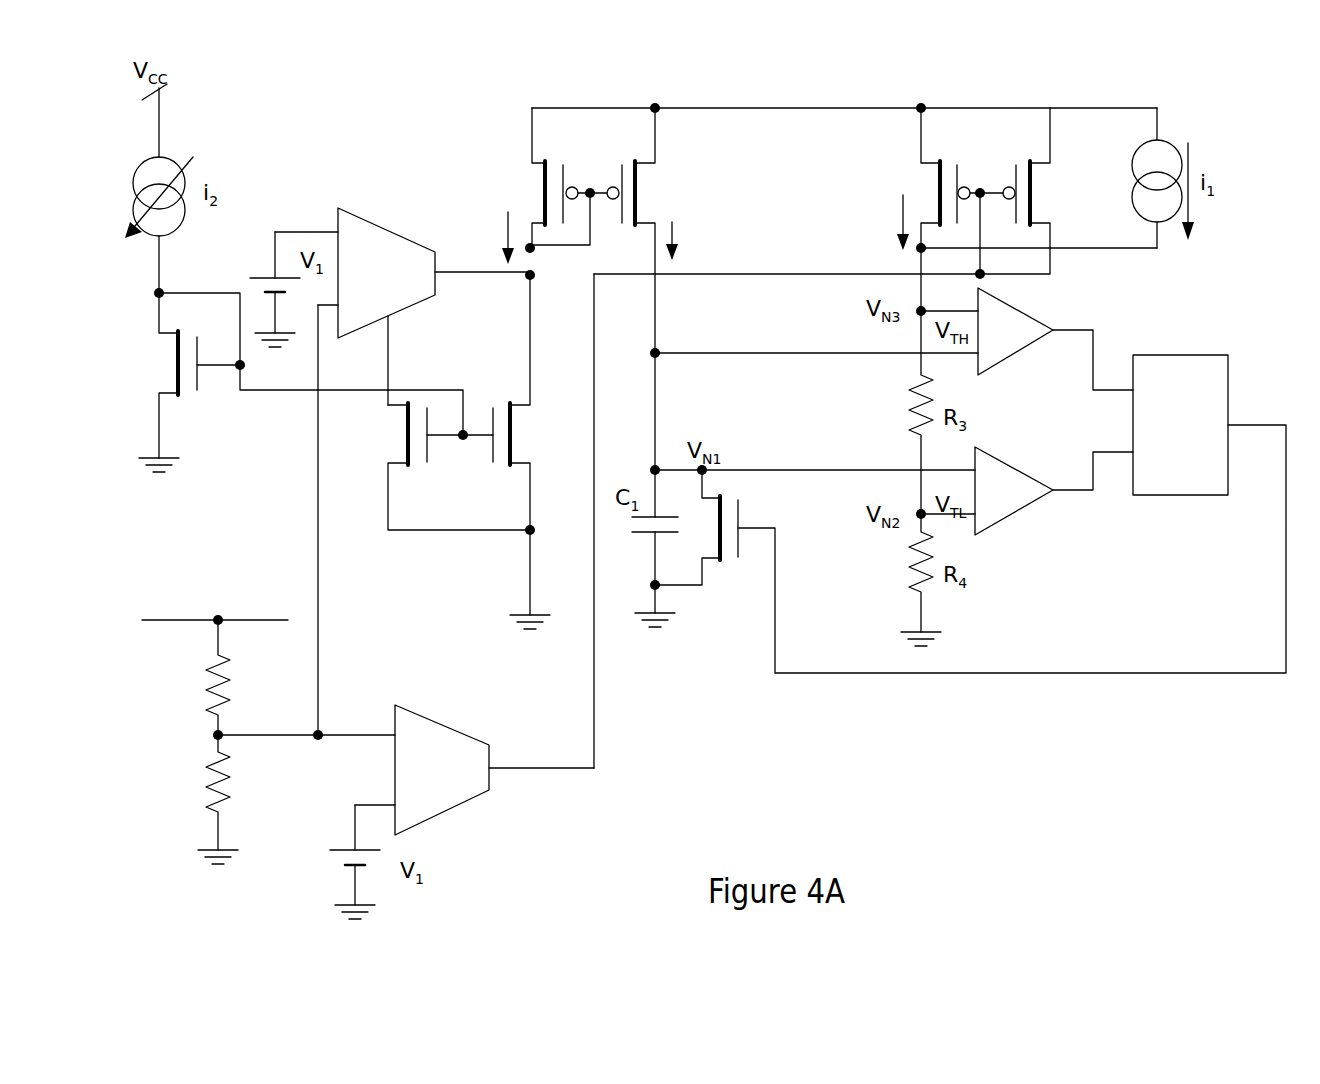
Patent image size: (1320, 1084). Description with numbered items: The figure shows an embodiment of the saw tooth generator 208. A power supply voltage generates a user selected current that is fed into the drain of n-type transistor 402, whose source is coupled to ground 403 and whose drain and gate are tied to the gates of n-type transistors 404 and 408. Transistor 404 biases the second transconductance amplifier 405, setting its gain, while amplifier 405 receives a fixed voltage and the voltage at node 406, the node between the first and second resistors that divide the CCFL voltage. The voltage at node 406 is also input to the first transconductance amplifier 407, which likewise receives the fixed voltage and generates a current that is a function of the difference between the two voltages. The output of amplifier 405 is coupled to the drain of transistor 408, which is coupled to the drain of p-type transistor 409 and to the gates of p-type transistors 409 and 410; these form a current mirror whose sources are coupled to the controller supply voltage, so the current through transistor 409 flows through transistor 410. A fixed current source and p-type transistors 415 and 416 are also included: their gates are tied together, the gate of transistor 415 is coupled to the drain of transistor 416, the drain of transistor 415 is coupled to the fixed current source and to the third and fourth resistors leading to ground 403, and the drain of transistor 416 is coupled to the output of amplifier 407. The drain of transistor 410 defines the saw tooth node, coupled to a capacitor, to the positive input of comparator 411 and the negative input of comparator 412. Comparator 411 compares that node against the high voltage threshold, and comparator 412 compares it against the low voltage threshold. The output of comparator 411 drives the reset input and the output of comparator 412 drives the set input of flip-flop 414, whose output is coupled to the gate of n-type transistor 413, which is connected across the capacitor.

The saw tooth generator 208 is at (316, 82).
The n-type transistor 402 is at (183, 396).
The ground 403 is at (272, 348).
The n-type transistor 404 is at (409, 404).
The transconductance amplifier 405 is at (383, 228).
The node 406 is at (215, 733).
The transconductance amplifier 407 is at (432, 725).
The n-type transistor 408 is at (512, 446).
The p-type transistor 409 is at (543, 204).
The p-type transistor 410 is at (656, 193).
The comparator 411 is at (1035, 314).
The comparator 412 is at (1005, 461).
The n-type transistor 413 is at (721, 560).
The flip-flop 414 is at (1161, 352).
The p-type transistor 415 is at (937, 190).
The p-type transistor 416 is at (1035, 187).